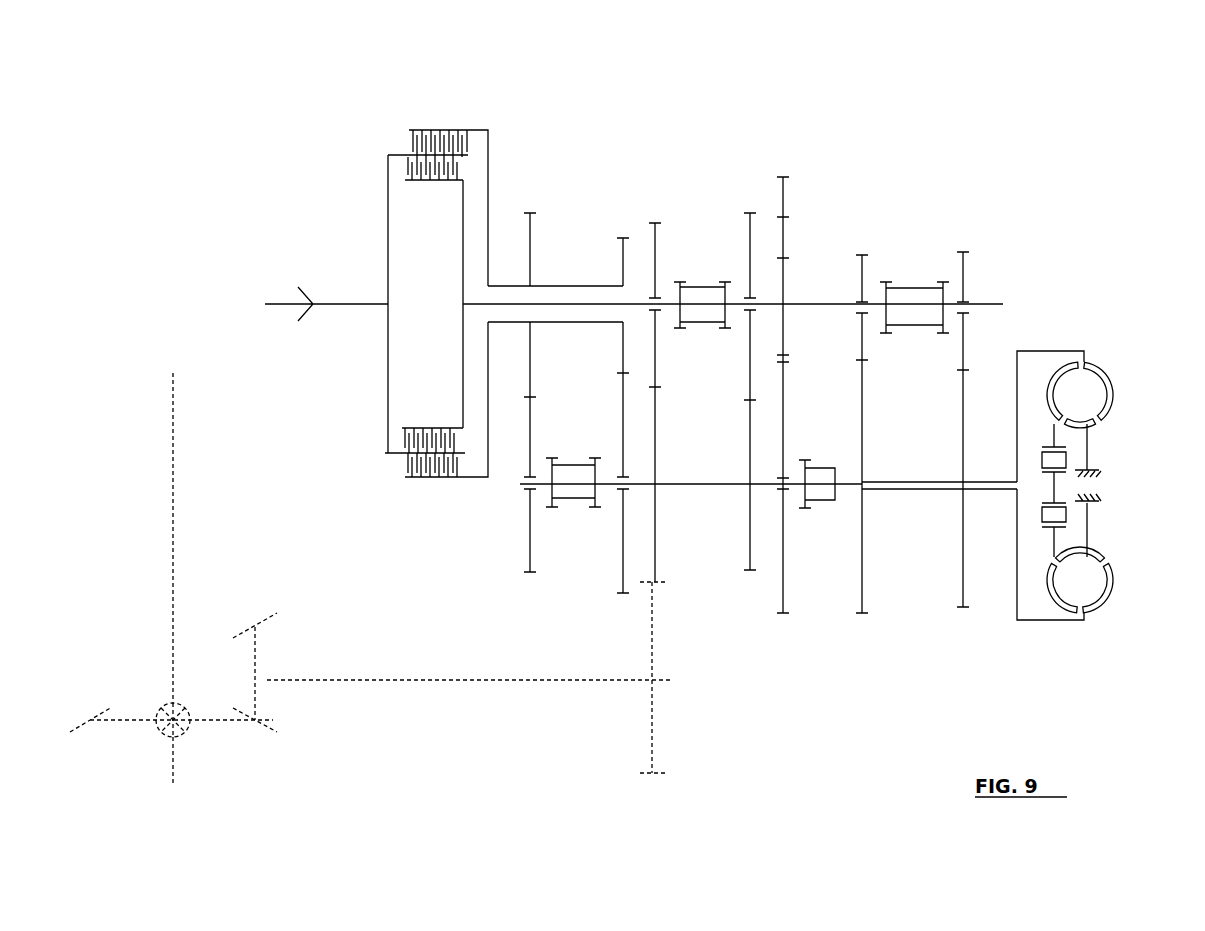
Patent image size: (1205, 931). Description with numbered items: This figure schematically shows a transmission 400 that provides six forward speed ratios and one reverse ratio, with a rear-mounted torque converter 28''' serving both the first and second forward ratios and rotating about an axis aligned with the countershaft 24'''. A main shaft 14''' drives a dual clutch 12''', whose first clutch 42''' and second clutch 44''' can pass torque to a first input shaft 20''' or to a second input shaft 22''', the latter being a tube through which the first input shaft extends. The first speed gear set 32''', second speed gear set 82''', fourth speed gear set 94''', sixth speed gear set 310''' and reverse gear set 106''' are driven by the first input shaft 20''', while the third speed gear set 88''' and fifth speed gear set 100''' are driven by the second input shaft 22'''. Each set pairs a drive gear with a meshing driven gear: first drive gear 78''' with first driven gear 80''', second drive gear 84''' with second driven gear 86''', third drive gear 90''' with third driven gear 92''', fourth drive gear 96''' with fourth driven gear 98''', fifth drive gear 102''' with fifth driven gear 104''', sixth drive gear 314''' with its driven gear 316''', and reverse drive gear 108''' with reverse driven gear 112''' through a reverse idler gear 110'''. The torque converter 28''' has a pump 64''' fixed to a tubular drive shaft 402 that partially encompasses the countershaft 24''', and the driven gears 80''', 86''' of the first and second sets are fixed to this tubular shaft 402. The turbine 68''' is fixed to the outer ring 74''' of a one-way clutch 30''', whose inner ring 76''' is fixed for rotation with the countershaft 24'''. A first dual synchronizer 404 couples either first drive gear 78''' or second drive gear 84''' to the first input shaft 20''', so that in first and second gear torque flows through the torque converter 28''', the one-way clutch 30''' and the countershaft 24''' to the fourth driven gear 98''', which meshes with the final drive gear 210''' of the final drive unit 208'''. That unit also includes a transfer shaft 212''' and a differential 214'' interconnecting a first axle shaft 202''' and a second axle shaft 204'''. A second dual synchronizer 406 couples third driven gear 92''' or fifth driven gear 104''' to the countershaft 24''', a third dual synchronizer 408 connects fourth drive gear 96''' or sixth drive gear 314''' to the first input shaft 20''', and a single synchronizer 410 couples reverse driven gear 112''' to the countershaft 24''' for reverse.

The dual clutch 12''' is at (465, 267).
The main shaft 14''' is at (326, 282).
The first input shaft 20''' is at (699, 322).
The second input shaft 22''' is at (555, 279).
The countershaft 24''' is at (691, 512).
The torque converter 28''' is at (1079, 448).
The one-way clutch 30''' is at (1100, 478).
The first speed gear set 32''' is at (868, 383).
The first clutch 42''' is at (435, 192).
The second clutch 44''' is at (475, 279).
The pump 64''' is at (1134, 391).
The turbine 68''' is at (1068, 358).
The outer ring 74''' is at (1015, 439).
The inner ring 76''' is at (1115, 490).
The first drive gear 78''' is at (840, 270).
The first driven gear 80''' is at (890, 463).
The second speed gear set 82''' is at (988, 379).
The second drive gear 84''' is at (991, 273).
The second driven gear 86''' is at (983, 460).
The third speed gear set 88''' is at (598, 366).
The third drive gear 90''' is at (595, 262).
The third driven gear 92''' is at (600, 457).
The fourth speed gear set 94''' is at (673, 349).
The fourth drive gear 96''' is at (679, 252).
The fourth driven gear 98''' is at (675, 446).
The fifth speed gear set 100''' is at (543, 348).
The fifth drive gear 102''' is at (553, 249).
The fifth driven gear 104''' is at (553, 447).
The reverse gear set 106''' is at (802, 347).
The reverse drive gear 108''' is at (805, 310).
The reverse idler gear 110''' is at (812, 215).
The reverse driven gear 112''' is at (807, 487).
The first axle shaft 202''' is at (224, 538).
The second axle shaft 204''' is at (215, 761).
The final drive unit 208''' is at (490, 677).
The final drive gear 210''' is at (688, 677).
The transfer shaft 212''' is at (453, 672).
The differential 214'' is at (171, 699).
The sixth speed gear set 310''' is at (711, 345).
The sixth drive gear 314''' is at (726, 255).
The sixth gear driven gear 316''' is at (707, 440).
The transmission 400 is at (891, 337).
The tubular shaft 402 is at (978, 480).
The first dual synchronizer 404 is at (913, 335).
The second dual synchronizer 406 is at (574, 507).
The third dual synchronizer 408 is at (701, 333).
The single synchronizer 410 is at (822, 512).